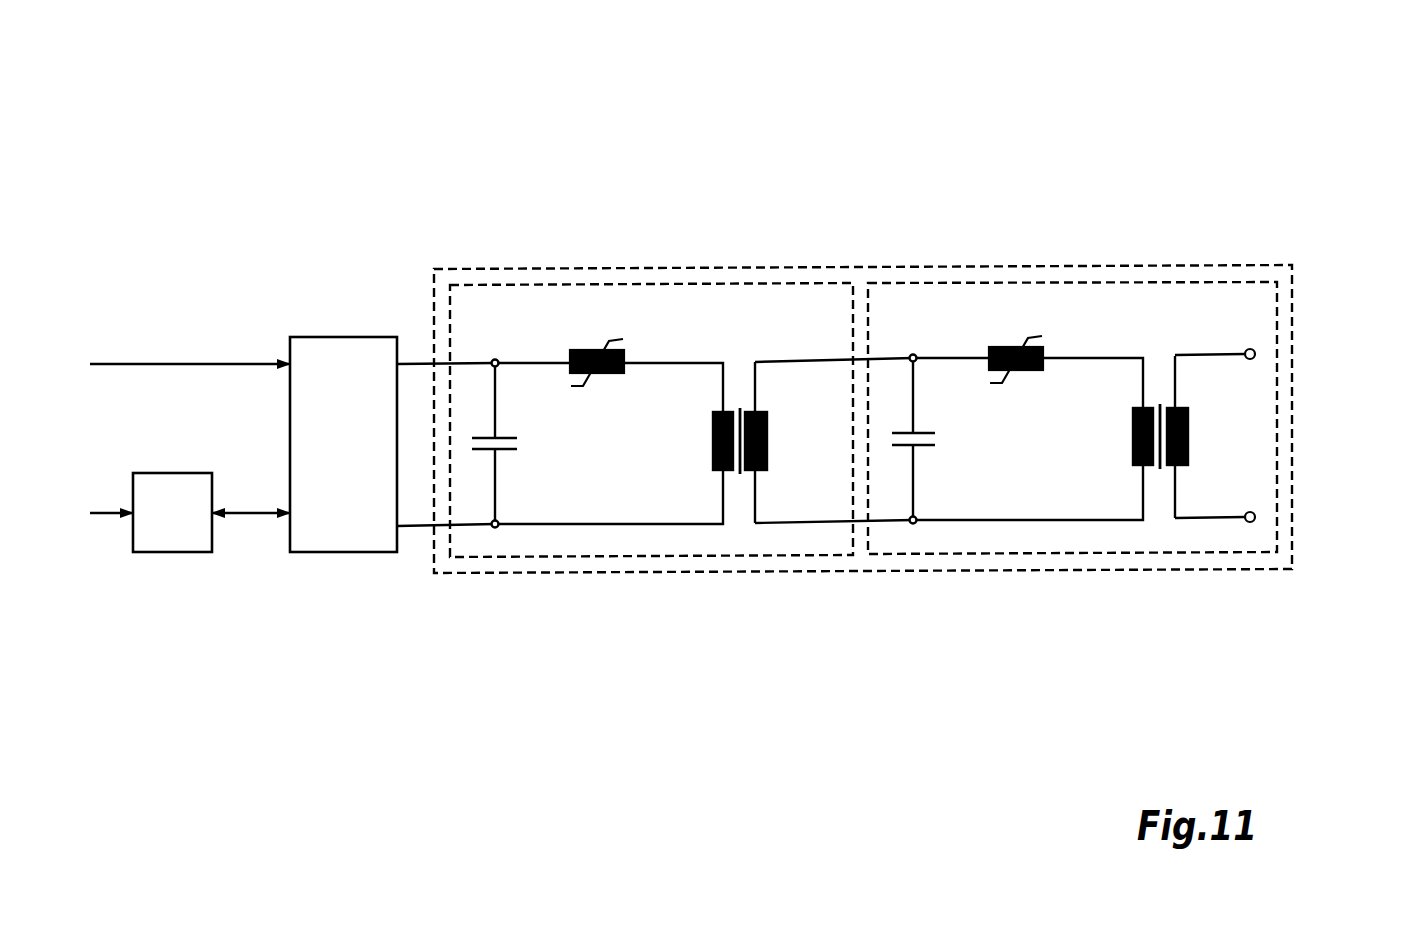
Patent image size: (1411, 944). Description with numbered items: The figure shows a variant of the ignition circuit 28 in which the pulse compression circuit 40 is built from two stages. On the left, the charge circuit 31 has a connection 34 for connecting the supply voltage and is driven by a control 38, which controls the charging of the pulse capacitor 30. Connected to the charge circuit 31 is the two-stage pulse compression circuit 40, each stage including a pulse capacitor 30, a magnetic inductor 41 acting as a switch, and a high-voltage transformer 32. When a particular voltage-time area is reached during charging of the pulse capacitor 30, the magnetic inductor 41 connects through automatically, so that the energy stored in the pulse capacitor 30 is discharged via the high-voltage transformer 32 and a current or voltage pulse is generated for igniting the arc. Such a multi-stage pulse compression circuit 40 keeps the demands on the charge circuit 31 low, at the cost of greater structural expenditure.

The ignition circuit 28 is at (1233, 158).
The pulse capacitor 30 is at (525, 468).
The charge circuit 31 is at (348, 517).
The high-voltage transformer 32 is at (768, 488).
The connection 34 is at (193, 364).
The control 38 is at (173, 525).
The pulse compression circuit 40 is at (685, 313).
The magnetic inductor 41 is at (565, 330).